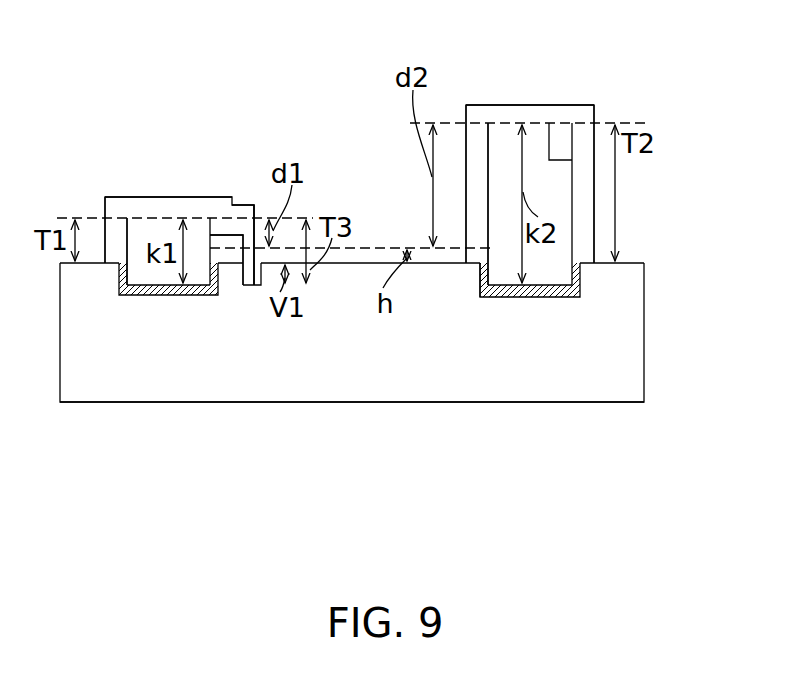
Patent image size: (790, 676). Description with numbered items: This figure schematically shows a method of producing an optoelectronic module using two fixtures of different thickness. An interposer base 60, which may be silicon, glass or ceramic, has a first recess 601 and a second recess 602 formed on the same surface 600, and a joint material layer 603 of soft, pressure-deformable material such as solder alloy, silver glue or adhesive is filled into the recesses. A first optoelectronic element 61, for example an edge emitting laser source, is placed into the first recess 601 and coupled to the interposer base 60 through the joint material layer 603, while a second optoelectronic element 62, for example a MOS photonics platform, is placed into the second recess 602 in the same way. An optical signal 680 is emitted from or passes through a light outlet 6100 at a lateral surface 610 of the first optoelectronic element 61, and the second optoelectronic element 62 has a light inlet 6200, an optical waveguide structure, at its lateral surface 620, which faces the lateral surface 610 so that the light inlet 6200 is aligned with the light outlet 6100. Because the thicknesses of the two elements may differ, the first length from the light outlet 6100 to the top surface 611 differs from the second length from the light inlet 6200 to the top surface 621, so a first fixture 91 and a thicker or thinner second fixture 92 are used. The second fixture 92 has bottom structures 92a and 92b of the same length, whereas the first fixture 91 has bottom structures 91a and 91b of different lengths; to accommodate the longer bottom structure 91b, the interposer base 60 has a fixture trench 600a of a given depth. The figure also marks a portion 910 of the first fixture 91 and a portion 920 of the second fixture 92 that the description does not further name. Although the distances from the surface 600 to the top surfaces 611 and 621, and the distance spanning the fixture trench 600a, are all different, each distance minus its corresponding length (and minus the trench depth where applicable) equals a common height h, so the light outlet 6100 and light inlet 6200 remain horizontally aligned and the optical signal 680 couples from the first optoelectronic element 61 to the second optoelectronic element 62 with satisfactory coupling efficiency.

The interposer base 60 is at (605, 393).
The surface of the interposer base 600 is at (637, 263).
The fixture trench 600a is at (248, 270).
The first recess 601 is at (162, 295).
The second recess 602 is at (552, 297).
The joint material layer 603 is at (183, 293).
The first optoelectronic element 61 is at (202, 235).
The lateral surface of the first optoelectronic element 610 is at (212, 235).
The light outlet 6100 is at (210, 248).
The top surface of the first optoelectronic element 611 is at (167, 218).
The second optoelectronic element 62 is at (503, 140).
The lateral surface of the second optoelectronic element 620 is at (487, 135).
The light inlet 6200 is at (483, 258).
The top surface of the second optoelectronic element 621 is at (543, 120).
The optical signal 680 is at (368, 248).
The first fixture 91 is at (147, 207).
The inner wall of first metal pad 910 is at (142, 235).
The bottom structure of the first fixture 91a is at (110, 250).
The bottom structure of the first fixture 91b is at (262, 275).
The second fixture 92 is at (588, 110).
The notch of second metal pad 920 is at (558, 132).
The bottom structure of the second fixture 92a is at (588, 252).
The bottom structure of the second fixture 92b is at (480, 252).